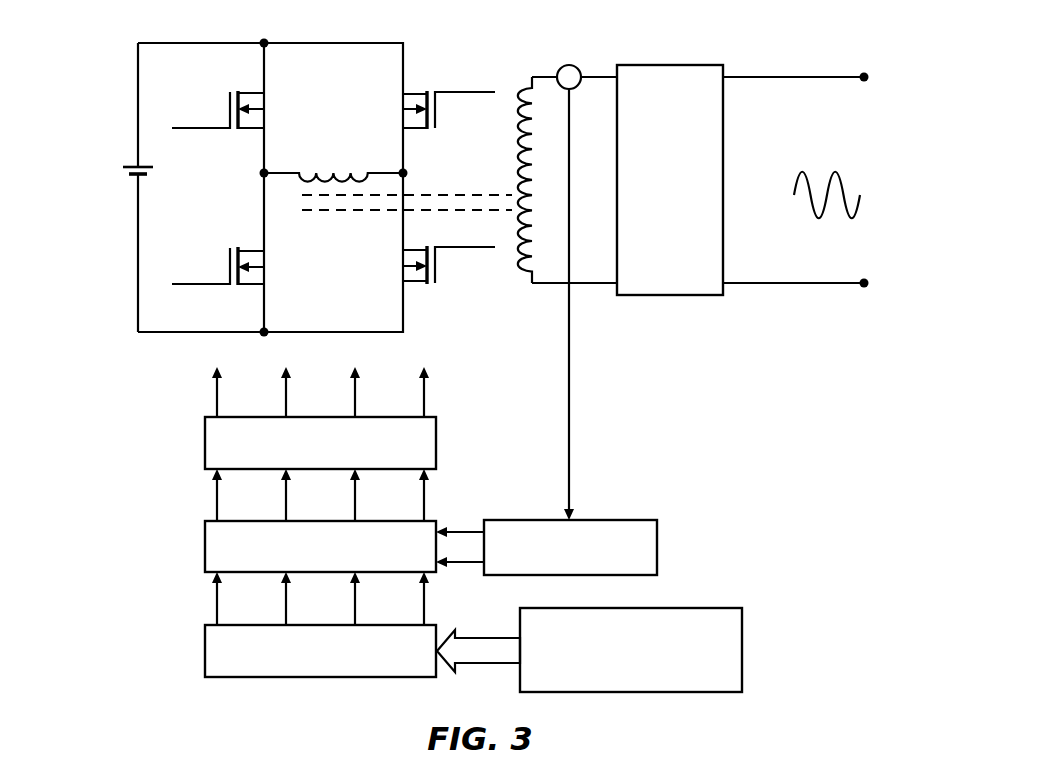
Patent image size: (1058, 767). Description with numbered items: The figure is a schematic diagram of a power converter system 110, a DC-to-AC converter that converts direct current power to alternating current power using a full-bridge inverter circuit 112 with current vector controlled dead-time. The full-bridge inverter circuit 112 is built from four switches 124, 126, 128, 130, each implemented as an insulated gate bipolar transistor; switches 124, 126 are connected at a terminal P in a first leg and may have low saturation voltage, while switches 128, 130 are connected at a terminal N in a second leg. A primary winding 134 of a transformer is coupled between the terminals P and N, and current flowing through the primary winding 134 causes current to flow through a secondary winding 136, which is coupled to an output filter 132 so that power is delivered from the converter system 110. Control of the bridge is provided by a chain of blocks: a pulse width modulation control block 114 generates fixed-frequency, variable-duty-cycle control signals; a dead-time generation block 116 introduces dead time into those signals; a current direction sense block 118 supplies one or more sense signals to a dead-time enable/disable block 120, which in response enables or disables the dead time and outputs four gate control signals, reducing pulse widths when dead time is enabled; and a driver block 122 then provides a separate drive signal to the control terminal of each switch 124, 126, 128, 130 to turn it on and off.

The power converter system 110 is at (764, 38).
The full-bridge inverter circuit 112 is at (403, 60).
The pulse width modulation control block 114 is at (660, 608).
The dead-time generation block 116 is at (205, 651).
The current direction sense block 118 is at (615, 520).
The dead-time enable/disable block 120 is at (205, 557).
The driver block 122 is at (205, 452).
The switch 124 is at (259, 101).
The switch 126 is at (259, 259).
The switch 128 is at (405, 117).
The switch 130 is at (405, 270).
The output filter 132 is at (673, 296).
The primary winding 134 is at (309, 170).
The secondary winding 136 is at (516, 158).